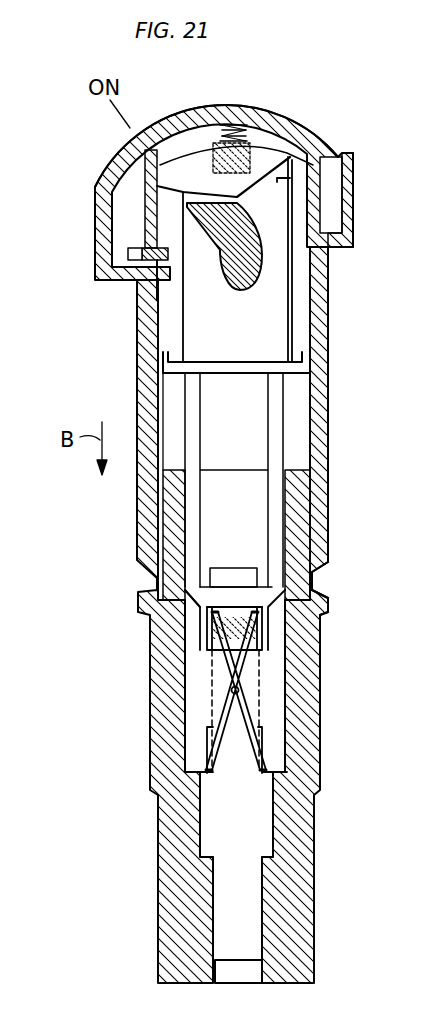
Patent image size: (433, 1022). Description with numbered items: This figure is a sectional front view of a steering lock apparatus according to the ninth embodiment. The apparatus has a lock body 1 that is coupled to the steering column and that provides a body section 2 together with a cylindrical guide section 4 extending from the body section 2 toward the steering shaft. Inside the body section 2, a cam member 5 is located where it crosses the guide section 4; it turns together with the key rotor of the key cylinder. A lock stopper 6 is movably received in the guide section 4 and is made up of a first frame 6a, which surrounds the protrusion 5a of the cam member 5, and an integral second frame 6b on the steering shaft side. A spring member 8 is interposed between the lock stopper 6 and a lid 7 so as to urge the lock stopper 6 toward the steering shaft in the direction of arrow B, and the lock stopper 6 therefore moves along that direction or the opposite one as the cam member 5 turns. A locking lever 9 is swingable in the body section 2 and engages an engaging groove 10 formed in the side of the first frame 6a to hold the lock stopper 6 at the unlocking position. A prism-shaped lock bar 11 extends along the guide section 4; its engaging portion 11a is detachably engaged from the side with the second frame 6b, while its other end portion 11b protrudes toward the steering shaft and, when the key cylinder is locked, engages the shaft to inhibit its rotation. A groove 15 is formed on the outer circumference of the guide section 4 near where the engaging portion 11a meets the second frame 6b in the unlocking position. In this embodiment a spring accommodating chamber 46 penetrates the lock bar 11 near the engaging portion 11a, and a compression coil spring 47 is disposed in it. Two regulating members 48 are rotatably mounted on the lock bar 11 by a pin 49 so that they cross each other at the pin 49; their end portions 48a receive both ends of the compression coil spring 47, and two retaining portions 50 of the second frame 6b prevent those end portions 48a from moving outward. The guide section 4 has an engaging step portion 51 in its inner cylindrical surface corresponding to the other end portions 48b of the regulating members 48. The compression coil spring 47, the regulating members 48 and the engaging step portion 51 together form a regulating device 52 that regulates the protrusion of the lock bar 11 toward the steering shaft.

The lock body 1 is at (346, 166).
The body section 2 is at (355, 213).
The guide section 4 is at (320, 831).
The cam member 5 is at (262, 268).
The protrusion 5a is at (186, 204).
The lock stopper 6 is at (276, 408).
The first frame 6a is at (298, 332).
The second frame 6b is at (278, 506).
The lid 7 is at (286, 117).
The spring member 8 is at (248, 126).
The locking lever 9 is at (128, 255).
The engaging groove 10 is at (137, 283).
The lock bar 11 is at (247, 808).
The engaging portion 11a is at (323, 592).
The other end portion 11b is at (245, 955).
The groove 15 is at (322, 581).
The spring accommodating chamber 46 is at (200, 605).
The compression coil spring 47 is at (226, 618).
The regulating members 48 is at (216, 706).
The end portions 48a is at (213, 650).
The other end portions 48b is at (209, 755).
The pin 49 is at (240, 690).
The retaining portions 50 is at (207, 627).
The engaging step portion 51 is at (185, 768).
The regulating device 52 is at (268, 731).